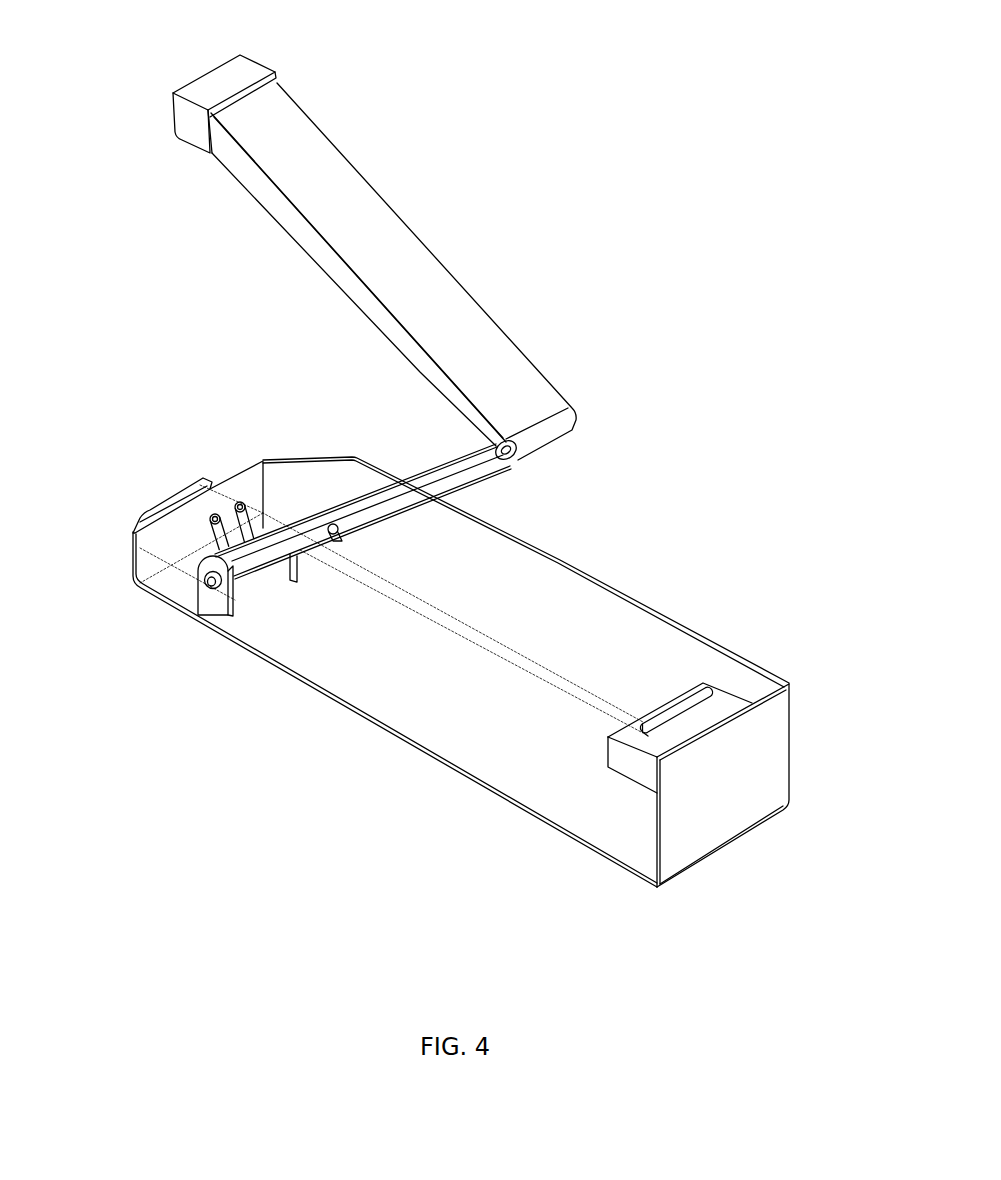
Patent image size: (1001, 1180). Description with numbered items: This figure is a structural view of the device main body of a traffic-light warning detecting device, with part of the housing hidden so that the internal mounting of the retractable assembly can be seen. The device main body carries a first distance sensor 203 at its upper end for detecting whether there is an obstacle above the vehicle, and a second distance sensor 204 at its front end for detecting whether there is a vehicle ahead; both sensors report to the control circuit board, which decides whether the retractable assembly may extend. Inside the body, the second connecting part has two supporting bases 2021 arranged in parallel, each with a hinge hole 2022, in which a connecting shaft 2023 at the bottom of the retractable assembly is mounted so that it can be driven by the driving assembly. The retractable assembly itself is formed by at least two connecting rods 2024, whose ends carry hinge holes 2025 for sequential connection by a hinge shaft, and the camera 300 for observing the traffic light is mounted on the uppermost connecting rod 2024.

The camera 300 is at (198, 73).
The first distance sensor 203 is at (683, 706).
The second distance sensor 204 is at (180, 492).
The supporting base 2021 is at (200, 594).
The hinge hole 2022 is at (220, 590).
The connecting shaft 2023 is at (210, 581).
The connecting rod 2024 is at (400, 520).
The hinge hole 2025 is at (514, 456).